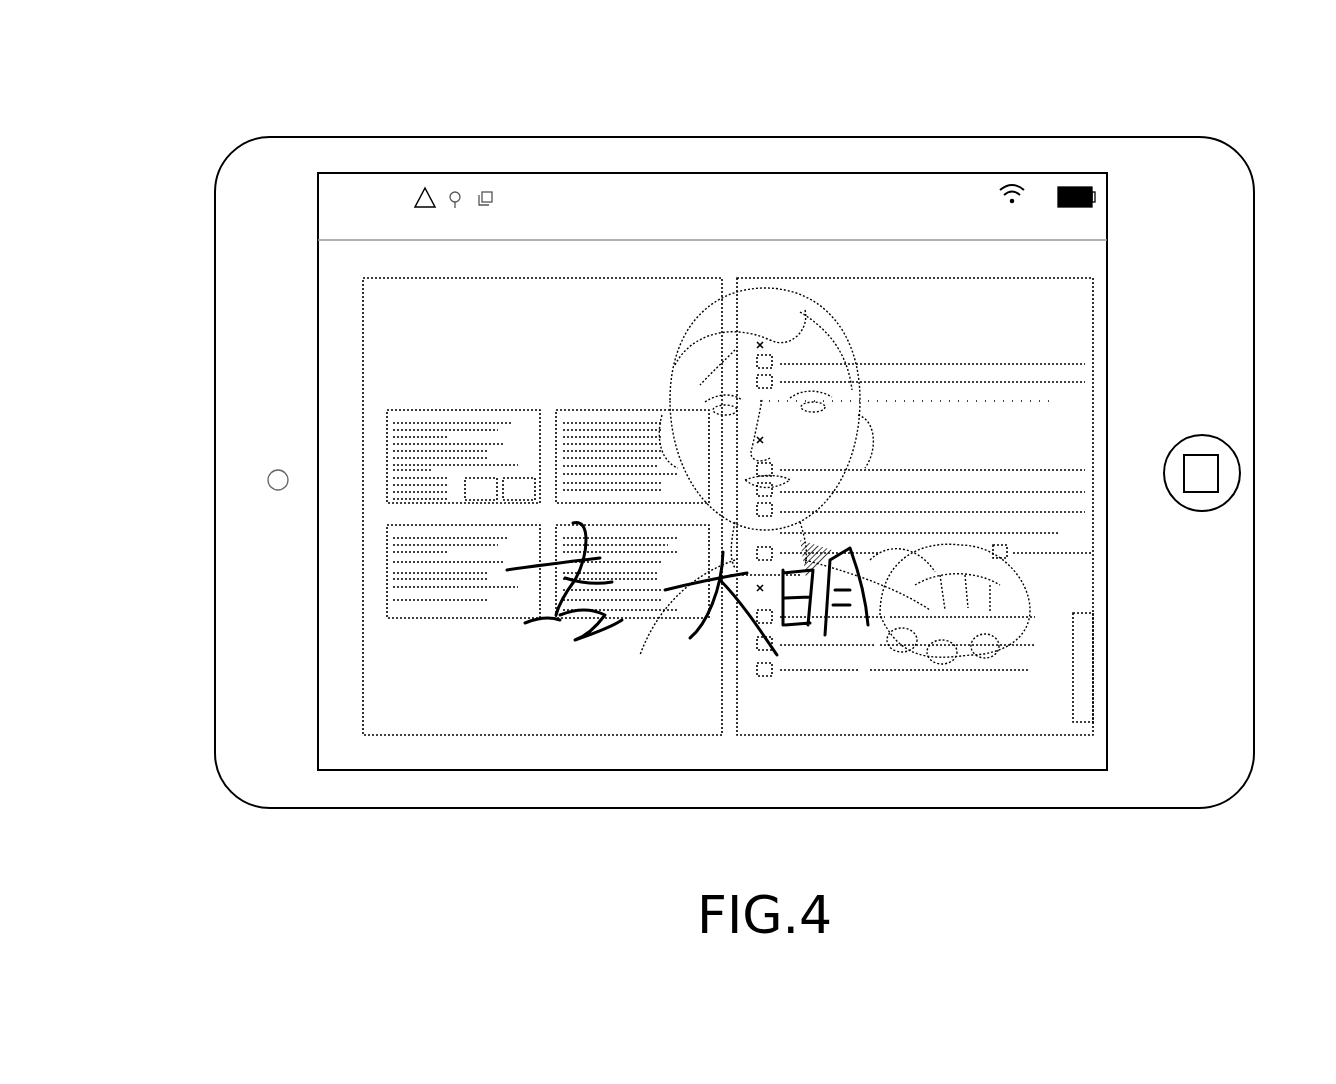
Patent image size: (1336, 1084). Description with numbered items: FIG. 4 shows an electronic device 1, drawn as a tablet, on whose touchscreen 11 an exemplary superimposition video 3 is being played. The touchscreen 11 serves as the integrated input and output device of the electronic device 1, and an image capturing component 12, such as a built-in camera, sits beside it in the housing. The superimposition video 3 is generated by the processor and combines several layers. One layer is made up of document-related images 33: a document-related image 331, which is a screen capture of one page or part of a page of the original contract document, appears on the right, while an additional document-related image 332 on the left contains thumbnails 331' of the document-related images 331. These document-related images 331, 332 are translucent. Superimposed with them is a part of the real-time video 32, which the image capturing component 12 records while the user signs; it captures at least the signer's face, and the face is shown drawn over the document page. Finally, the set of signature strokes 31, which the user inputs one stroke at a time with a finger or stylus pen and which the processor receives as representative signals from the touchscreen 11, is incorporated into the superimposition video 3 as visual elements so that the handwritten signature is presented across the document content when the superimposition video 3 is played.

The electronic device 1 is at (205, 185).
The superimposition video 3 is at (702, 474).
The touchscreen 11 is at (317, 640).
The image capturing component 12 is at (270, 474).
The signature strokes 31 is at (583, 625).
The real-time video 32 is at (753, 287).
The document-related images 33 is at (589, 399).
The document-related image 331 is at (915, 399).
The thumbnails 331' is at (397, 471).
The additional document-related image 332 is at (404, 401).